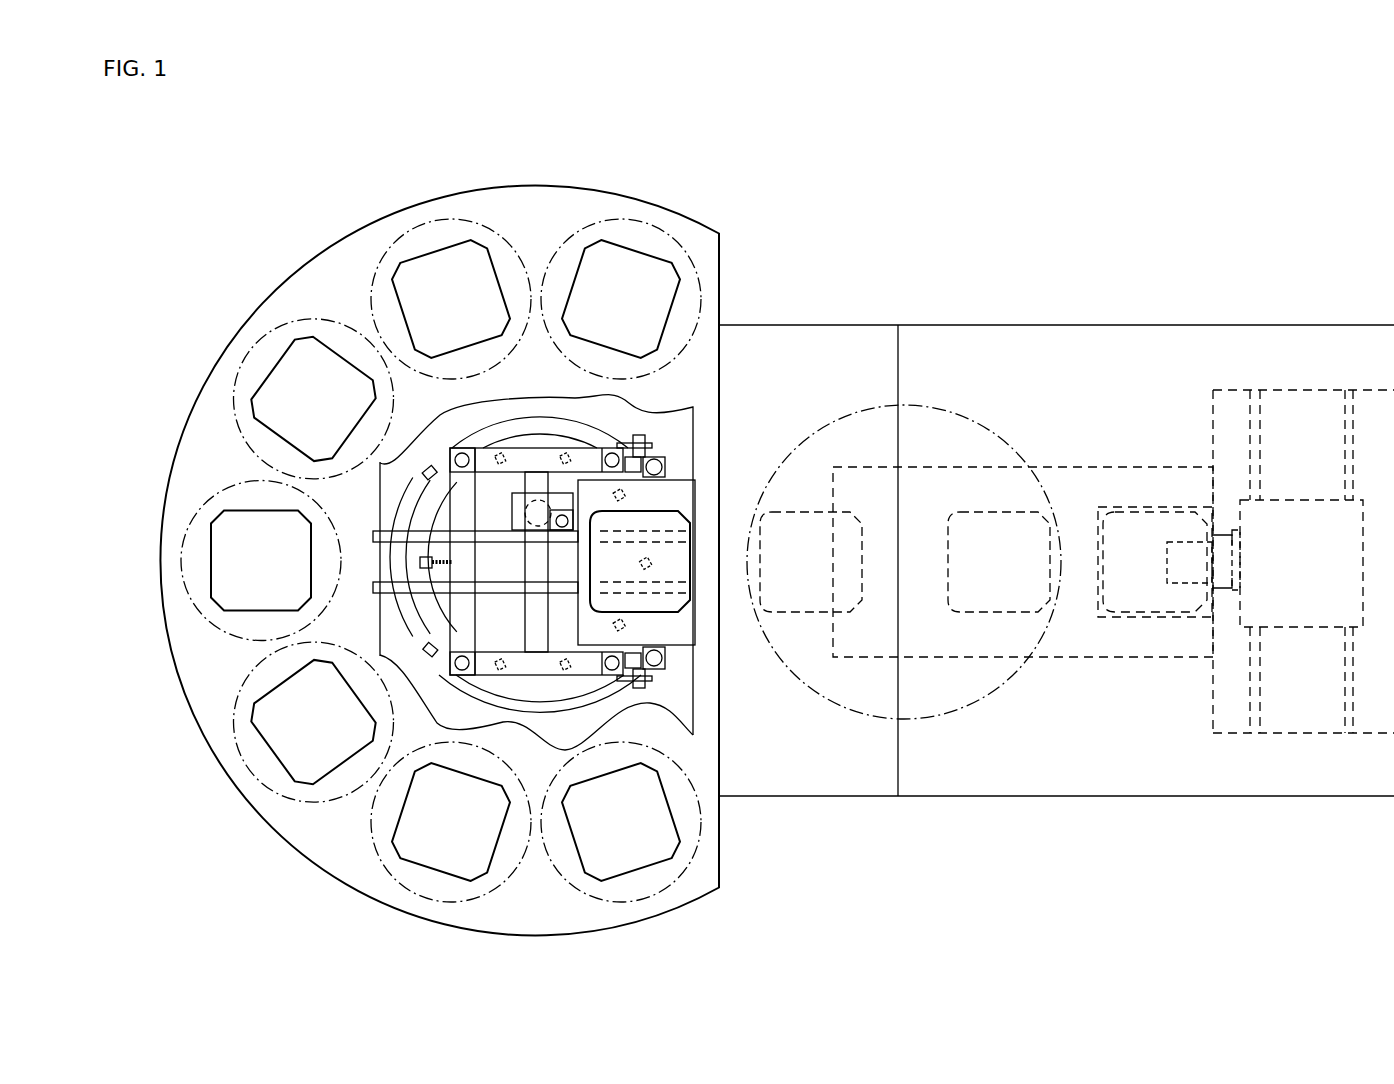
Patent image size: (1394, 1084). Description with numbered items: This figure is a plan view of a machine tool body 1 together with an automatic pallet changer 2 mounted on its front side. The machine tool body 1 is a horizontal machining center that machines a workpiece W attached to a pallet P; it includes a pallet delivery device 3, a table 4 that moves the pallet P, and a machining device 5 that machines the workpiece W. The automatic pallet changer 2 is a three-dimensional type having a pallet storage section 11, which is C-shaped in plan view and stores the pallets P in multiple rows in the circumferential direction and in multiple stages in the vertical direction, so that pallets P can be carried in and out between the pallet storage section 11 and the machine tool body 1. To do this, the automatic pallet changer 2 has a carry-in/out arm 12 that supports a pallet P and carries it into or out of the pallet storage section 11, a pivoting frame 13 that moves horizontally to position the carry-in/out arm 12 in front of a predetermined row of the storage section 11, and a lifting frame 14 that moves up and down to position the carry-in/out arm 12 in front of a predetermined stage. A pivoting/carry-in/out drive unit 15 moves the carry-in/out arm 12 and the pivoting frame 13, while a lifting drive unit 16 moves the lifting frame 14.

The machine tool body 1 is at (1225, 310).
The automatic pallet changer 2 is at (477, 524).
The pallet delivery device 3 is at (940, 719).
The table 4 is at (1138, 620).
The machining device 5 is at (1180, 613).
The pallet storage section 11 is at (540, 207).
The carry-in/out arm 12 is at (390, 592).
The pivoting frame 13 is at (483, 670).
The lifting frame 14 is at (678, 632).
The pivoting/carry-in/out drive unit 15 is at (560, 490).
The lifting drive unit 16 is at (665, 448).
The pallet P is at (442, 265).
The workpiece W is at (300, 325).